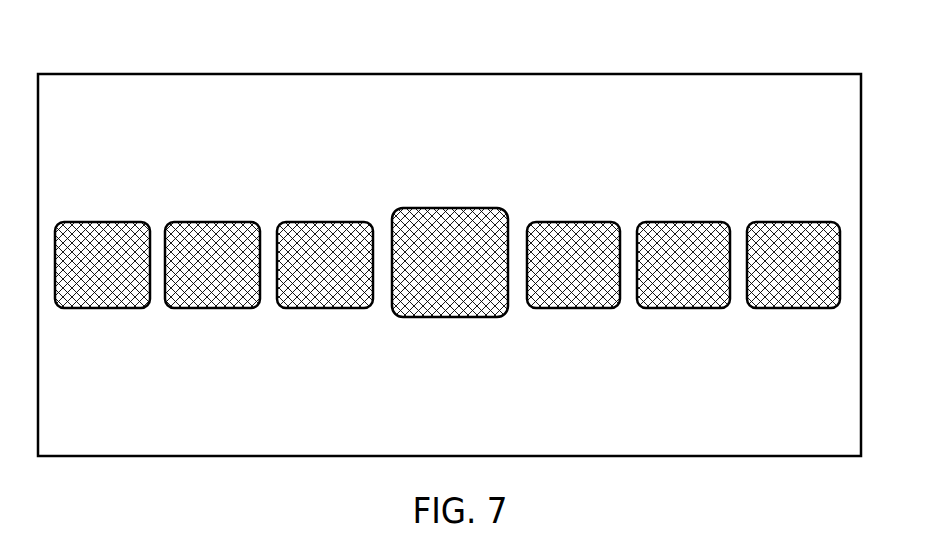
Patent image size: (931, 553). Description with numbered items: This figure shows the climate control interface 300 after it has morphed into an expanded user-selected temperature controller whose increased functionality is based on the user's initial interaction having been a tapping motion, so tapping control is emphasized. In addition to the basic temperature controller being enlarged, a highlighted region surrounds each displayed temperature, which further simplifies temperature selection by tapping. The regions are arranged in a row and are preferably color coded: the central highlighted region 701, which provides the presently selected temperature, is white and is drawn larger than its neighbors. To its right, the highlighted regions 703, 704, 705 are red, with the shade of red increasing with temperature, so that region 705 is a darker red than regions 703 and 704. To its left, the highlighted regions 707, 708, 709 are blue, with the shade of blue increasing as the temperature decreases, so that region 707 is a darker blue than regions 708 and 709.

The climate control interface 300 is at (779, 59).
The highlighted region 701 is at (450, 208).
The highlighted region 703 is at (573, 308).
The highlighted region 704 is at (683, 222).
The highlighted region 705 is at (793, 308).
The highlighted region 707 is at (102, 308).
The highlighted region 708 is at (212, 222).
The highlighted region 709 is at (325, 308).